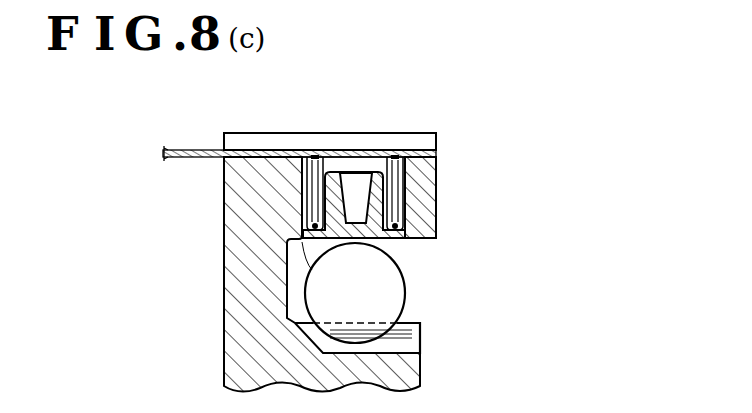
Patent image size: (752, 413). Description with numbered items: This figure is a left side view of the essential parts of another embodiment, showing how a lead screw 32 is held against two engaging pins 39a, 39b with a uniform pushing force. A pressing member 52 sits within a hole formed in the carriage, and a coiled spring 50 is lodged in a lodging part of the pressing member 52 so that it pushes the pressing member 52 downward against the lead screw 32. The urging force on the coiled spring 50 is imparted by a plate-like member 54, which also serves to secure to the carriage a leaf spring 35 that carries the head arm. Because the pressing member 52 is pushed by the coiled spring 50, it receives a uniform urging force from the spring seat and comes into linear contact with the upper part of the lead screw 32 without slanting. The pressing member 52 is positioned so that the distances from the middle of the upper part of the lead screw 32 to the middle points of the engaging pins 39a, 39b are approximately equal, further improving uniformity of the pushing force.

The lead screw 32 is at (370, 277).
The leaf spring 35 is at (184, 158).
The engaging pin 39a is at (380, 274).
The engaging pin 39b is at (402, 333).
The coiled spring 50 is at (309, 155).
The pressing member 52 is at (378, 188).
The plate-like member 54 is at (380, 147).